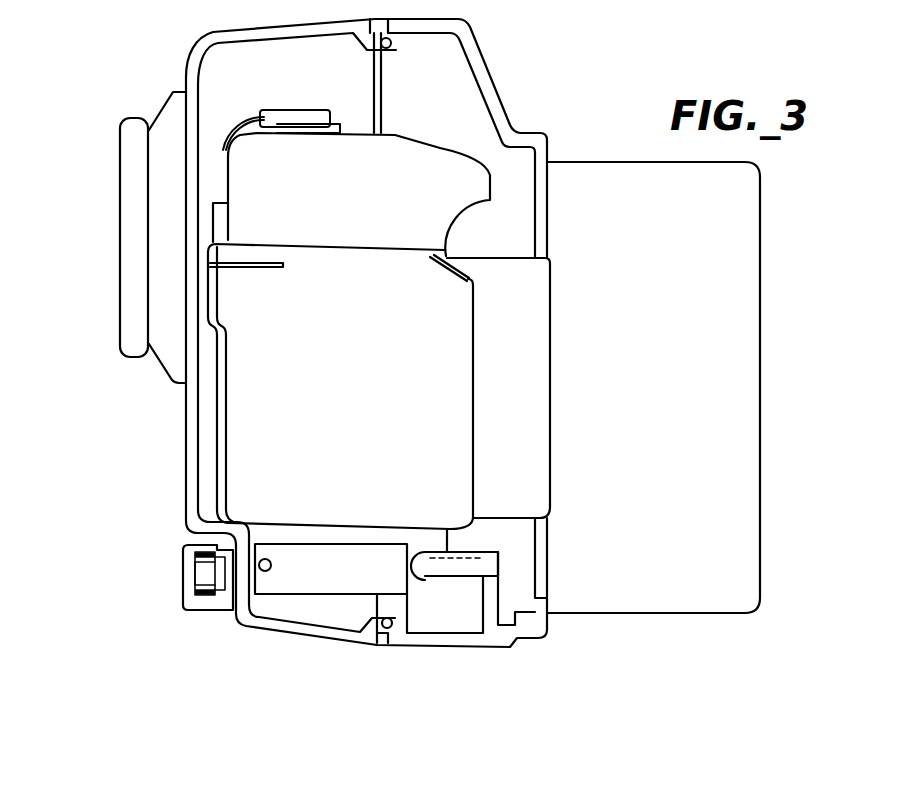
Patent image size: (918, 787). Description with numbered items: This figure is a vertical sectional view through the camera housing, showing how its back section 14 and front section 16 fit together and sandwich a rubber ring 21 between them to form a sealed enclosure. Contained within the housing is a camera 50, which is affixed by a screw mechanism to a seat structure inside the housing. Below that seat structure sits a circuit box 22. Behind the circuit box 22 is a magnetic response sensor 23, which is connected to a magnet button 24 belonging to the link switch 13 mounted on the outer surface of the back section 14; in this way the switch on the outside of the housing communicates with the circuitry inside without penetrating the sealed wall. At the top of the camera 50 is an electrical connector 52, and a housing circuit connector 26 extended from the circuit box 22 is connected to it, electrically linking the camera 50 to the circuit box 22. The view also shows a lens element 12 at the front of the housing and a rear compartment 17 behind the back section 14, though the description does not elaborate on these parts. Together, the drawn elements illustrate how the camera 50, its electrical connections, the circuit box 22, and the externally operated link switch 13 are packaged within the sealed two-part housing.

The lens 12 is at (140, 232).
The link switch 13 is at (210, 612).
The back section 14 is at (213, 32).
The front section 16 is at (498, 102).
The rear compartment 17 is at (718, 272).
The rubber ring 21 is at (393, 45).
The circuit box 22 is at (390, 575).
The magnetic response sensor 23 is at (265, 572).
The magnet button 24 is at (210, 578).
The housing circuit connector 26 is at (300, 115).
The camera 50 is at (447, 387).
The electrical connector 52 is at (297, 128).